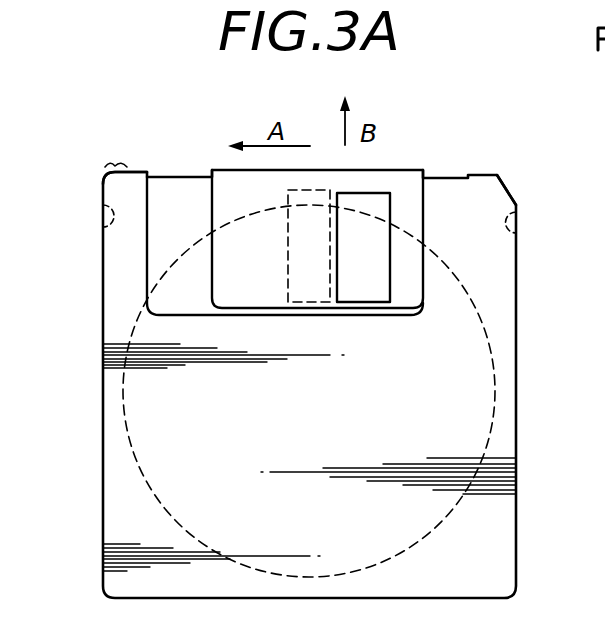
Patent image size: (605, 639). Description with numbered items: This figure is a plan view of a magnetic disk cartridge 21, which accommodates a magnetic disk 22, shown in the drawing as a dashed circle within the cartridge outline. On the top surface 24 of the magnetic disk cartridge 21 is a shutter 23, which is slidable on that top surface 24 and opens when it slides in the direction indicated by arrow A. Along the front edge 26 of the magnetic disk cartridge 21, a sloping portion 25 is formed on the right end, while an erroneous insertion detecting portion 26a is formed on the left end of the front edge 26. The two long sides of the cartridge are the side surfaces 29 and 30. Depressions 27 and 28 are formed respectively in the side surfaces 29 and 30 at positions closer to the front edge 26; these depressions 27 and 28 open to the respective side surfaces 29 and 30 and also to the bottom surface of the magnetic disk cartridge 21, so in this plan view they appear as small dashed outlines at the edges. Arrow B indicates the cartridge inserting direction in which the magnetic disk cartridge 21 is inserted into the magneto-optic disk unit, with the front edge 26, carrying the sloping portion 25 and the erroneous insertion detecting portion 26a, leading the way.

The magnetic disk cartridge 21 is at (431, 102).
The magnetic disk 22 is at (122, 388).
The shutter 23 is at (378, 182).
The top surface 24 is at (118, 533).
The sloping portion 25 is at (515, 192).
The front edge 26 is at (185, 177).
The erroneous insertion detecting portion 26a is at (118, 163).
The depression 27 is at (100, 223).
The depression 28 is at (520, 228).
The side surface 29 is at (103, 343).
The side surface 30 is at (518, 355).